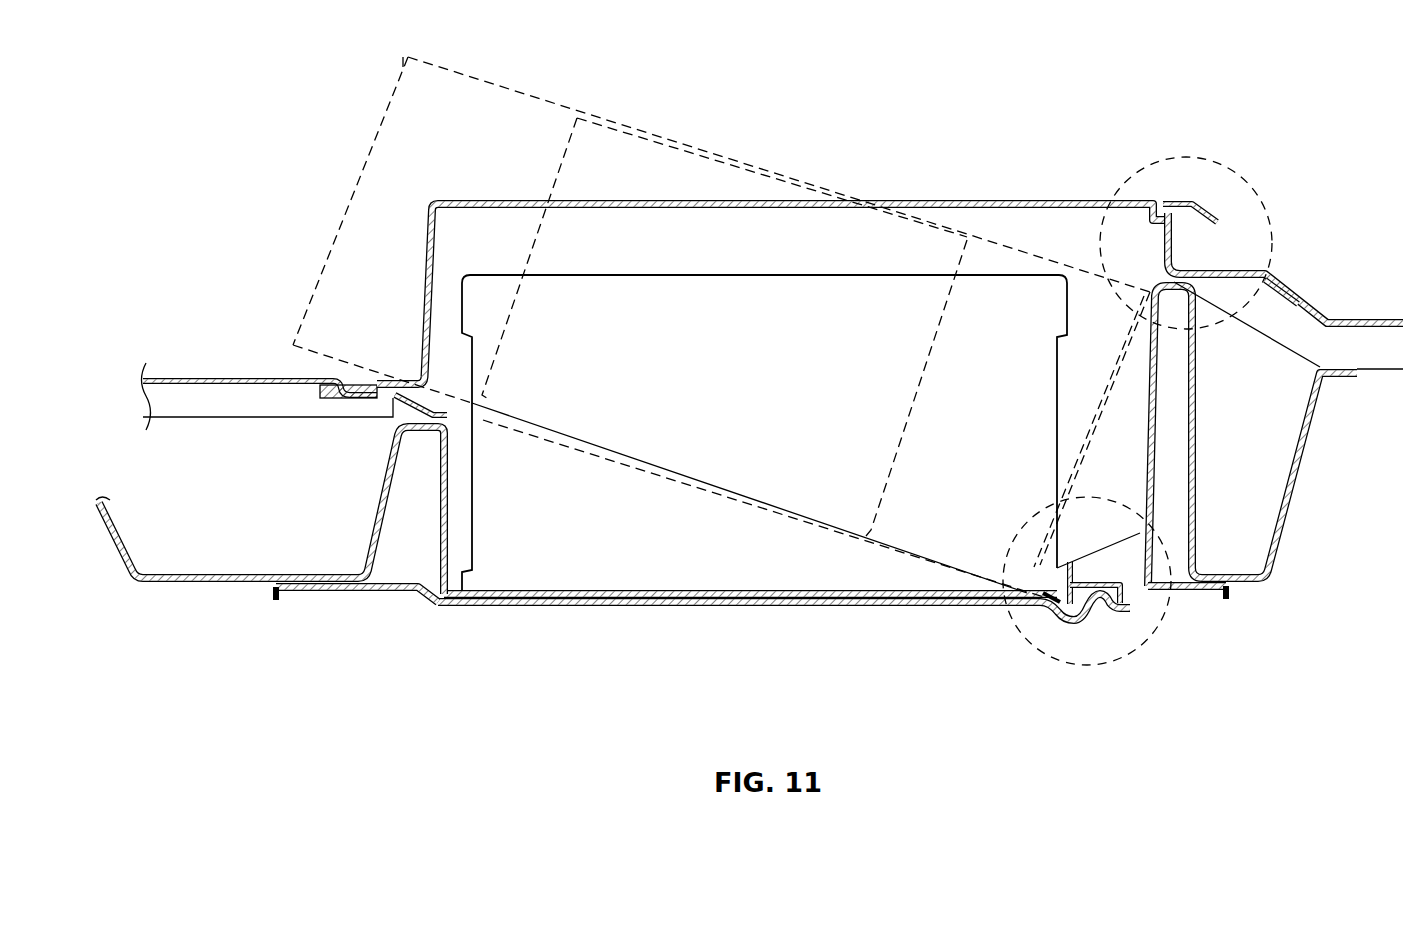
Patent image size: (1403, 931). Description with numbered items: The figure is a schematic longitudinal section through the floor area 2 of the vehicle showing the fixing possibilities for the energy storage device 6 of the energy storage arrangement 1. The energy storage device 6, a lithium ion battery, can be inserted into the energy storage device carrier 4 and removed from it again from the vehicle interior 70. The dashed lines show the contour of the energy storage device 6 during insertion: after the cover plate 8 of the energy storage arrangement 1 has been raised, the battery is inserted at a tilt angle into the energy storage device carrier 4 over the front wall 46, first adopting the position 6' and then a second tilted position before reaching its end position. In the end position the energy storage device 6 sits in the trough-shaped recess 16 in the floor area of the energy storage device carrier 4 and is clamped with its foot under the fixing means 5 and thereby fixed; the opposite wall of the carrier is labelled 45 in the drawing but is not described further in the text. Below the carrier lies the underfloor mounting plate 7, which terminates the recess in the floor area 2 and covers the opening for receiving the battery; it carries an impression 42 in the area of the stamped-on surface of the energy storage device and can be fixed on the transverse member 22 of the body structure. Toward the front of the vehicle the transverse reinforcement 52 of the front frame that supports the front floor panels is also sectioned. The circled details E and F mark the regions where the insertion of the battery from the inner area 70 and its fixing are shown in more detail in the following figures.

The vehicle interior 70 is at (848, 77).
The energy storage arrangement 1 is at (768, 388).
The floor area 2 is at (1118, 178).
The cover plate 8 is at (740, 200).
The energy storage device 6 is at (801, 410).
The position of the energy storage device 6' is at (721, 299).
The energy storage device carrier 4 is at (806, 442).
The bracket wall 45 is at (1157, 395).
The front wall 46 is at (448, 475).
The trough-shaped recess 16 is at (697, 590).
The impression 42 is at (752, 608).
The underfloor mounting plate 7 is at (388, 592).
The fixing means 5 is at (1078, 628).
The transverse member 22 is at (1283, 444).
The transverse reinforcement 52 is at (213, 567).
The detail E is at (1273, 249).
The detail F is at (1089, 668).